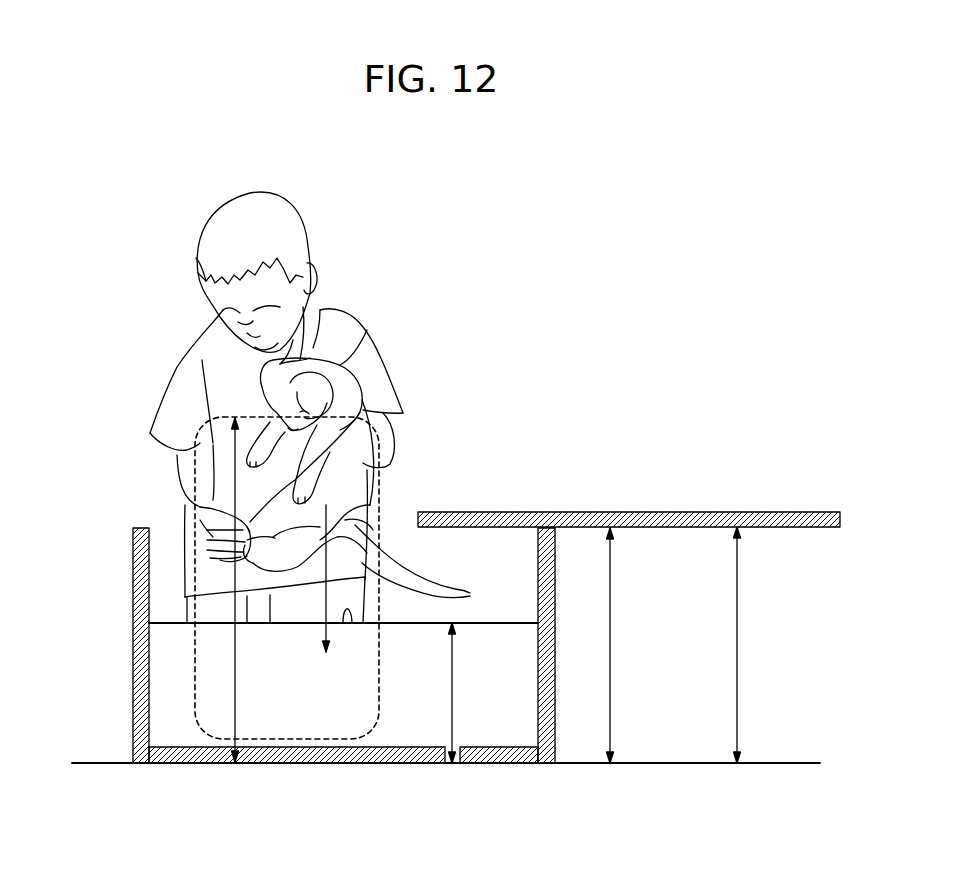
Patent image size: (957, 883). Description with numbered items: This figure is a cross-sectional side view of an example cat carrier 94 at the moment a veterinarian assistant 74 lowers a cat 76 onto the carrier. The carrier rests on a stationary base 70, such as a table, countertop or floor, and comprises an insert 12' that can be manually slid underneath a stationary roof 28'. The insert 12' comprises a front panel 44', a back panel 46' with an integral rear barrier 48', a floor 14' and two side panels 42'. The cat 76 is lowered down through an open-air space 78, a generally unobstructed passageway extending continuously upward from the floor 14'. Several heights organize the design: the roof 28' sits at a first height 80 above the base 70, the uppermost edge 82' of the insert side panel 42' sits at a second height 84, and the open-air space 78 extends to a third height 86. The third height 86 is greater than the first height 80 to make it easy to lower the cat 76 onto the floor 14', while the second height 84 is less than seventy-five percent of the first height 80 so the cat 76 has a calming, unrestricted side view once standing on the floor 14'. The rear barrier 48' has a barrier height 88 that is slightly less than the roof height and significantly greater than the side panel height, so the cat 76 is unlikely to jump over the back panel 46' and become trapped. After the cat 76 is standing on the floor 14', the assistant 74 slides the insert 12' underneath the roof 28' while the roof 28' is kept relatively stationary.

The insert 12' is at (328, 631).
The floor 14' is at (343, 716).
The roof 28' is at (629, 492).
The side panel 42' is at (343, 581).
The front panel 44' is at (107, 631).
The back panel 46' is at (565, 645).
The rear barrier 48' is at (500, 561).
The stationary base 70 is at (97, 762).
The veterinarian assistant 74 is at (299, 212).
The cat 76 is at (372, 372).
The open-air space 78 is at (194, 487).
The first height 80 is at (740, 633).
The uppermost edge 82' is at (346, 602).
The second height 84 is at (451, 680).
The third height 86 is at (236, 688).
The barrier height 88 is at (612, 586).
The cat carrier 94 is at (728, 412).